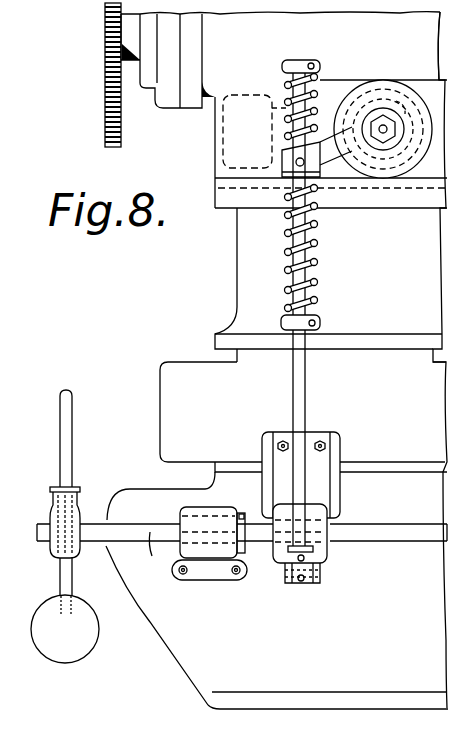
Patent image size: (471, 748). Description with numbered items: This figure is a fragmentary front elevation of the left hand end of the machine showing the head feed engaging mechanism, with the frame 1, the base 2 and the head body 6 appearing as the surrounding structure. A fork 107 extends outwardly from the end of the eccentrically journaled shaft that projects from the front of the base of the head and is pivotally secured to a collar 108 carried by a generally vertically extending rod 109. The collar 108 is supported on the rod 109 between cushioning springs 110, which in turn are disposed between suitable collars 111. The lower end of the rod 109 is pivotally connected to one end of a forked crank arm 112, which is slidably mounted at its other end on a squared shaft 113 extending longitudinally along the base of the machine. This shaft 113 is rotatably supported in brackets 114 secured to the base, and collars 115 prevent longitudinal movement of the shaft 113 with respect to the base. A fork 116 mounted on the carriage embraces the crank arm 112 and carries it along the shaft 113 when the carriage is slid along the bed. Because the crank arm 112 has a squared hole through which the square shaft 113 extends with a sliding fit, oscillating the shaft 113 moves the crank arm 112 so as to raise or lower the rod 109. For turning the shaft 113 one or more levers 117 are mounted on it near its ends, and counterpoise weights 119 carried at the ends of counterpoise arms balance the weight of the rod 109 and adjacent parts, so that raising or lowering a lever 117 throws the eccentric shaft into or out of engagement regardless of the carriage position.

The frame 1 is at (454, 209).
The base 2 is at (277, 590).
The body block 6 is at (303, 412).
The fork 107 is at (318, 166).
The collar 108 is at (284, 172).
The rod 109 is at (302, 388).
The cushioning springs 110 is at (311, 279).
The collars 111 is at (283, 322).
The forked crank arm 112 is at (322, 582).
The squared shaft 113 is at (45, 551).
The brackets 114 is at (217, 508).
The collars 115 is at (248, 552).
The fork 116 is at (338, 444).
The levers 117 is at (72, 441).
The counterpoise weights 119 is at (65, 629).